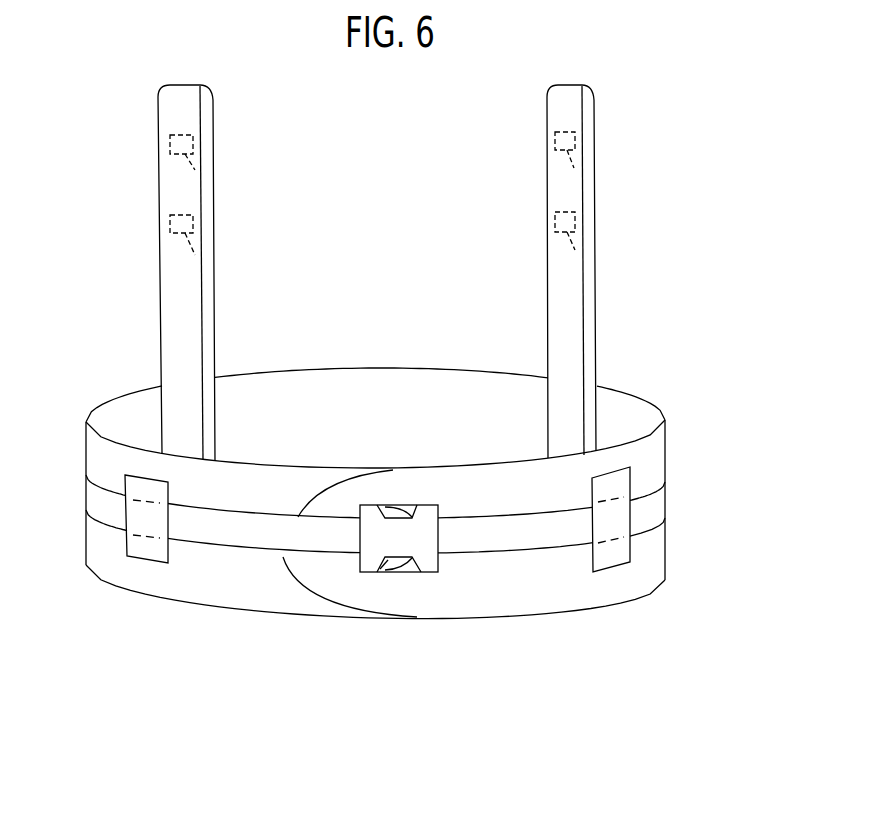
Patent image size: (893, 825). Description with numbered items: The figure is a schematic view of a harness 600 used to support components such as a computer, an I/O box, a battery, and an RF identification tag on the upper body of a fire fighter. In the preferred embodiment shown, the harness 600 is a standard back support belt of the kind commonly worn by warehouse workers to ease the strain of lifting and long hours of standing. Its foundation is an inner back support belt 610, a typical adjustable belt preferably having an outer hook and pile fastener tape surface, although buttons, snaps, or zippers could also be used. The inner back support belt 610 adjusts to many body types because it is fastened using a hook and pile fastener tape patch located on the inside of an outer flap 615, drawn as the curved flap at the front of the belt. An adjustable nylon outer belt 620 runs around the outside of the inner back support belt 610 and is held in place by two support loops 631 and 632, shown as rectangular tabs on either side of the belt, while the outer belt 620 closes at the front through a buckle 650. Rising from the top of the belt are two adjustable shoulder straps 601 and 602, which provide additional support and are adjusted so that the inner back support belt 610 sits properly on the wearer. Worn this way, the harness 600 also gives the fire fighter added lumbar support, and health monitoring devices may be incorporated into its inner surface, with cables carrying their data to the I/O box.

The harness 600 is at (273, 682).
The shoulder strap 601 is at (570, 83).
The shoulder strap 602 is at (190, 85).
The inner back support belt 610 is at (663, 450).
The outer flap 615 is at (327, 608).
The outer belt 620 is at (665, 495).
The support loop 631 is at (618, 567).
The support loop 632 is at (147, 562).
The buckle 650 is at (432, 574).